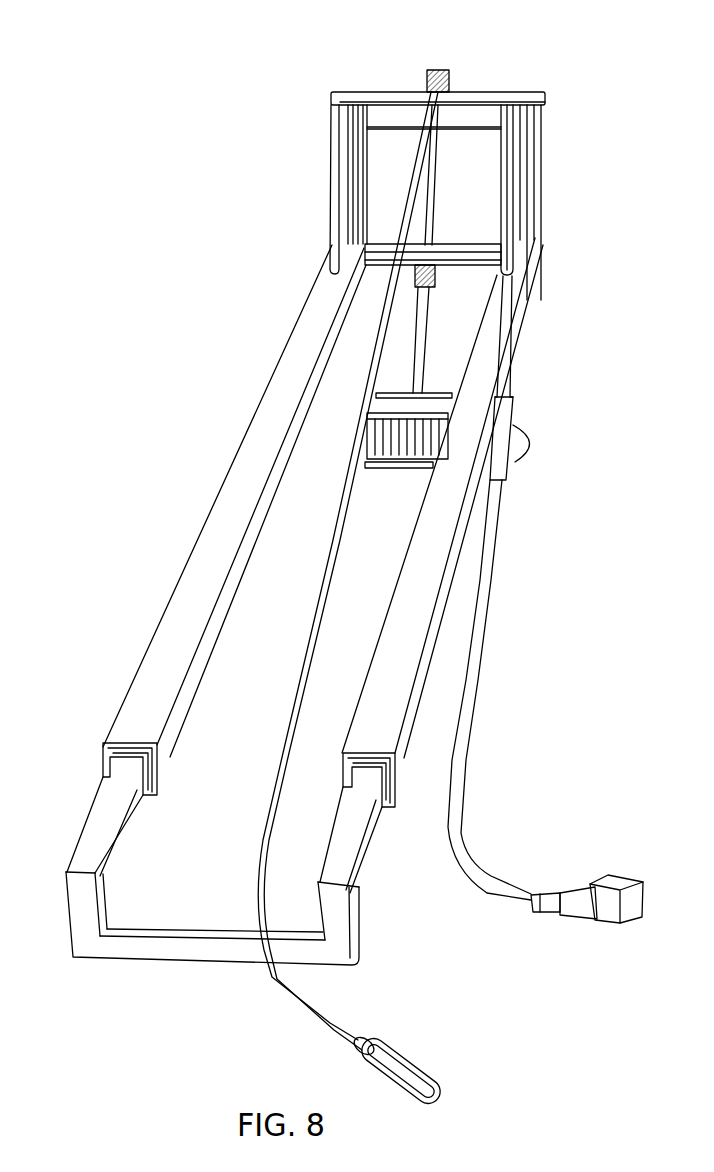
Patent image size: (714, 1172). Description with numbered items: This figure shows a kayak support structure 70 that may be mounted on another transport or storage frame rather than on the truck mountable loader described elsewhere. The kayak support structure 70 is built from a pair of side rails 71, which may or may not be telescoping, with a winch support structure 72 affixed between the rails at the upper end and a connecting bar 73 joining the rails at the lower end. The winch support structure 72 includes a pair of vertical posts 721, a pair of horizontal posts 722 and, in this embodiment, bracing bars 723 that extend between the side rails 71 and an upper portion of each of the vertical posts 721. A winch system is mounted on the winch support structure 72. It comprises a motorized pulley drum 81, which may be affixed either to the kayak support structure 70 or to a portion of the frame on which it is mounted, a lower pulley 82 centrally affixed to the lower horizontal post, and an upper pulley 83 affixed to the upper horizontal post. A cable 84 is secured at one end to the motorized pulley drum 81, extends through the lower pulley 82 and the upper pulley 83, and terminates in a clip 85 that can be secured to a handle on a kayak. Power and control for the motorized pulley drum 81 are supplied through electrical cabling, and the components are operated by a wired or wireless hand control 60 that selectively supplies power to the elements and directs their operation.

The hand control 60 is at (552, 888).
The kayak support structure 70 is at (197, 470).
The side rails 71 is at (367, 752).
The winch support structure 72 is at (471, 167).
The vertical posts 721 is at (538, 186).
The horizontal posts 722 is at (505, 115).
The bracing bars 723 is at (512, 247).
The connecting bar 73 is at (168, 947).
The motorized pulley drum 81 is at (447, 430).
The lower pulley 82 is at (447, 281).
The upper pulley 83 is at (447, 70).
The cable 84 is at (407, 175).
The clip 85 is at (414, 1060).